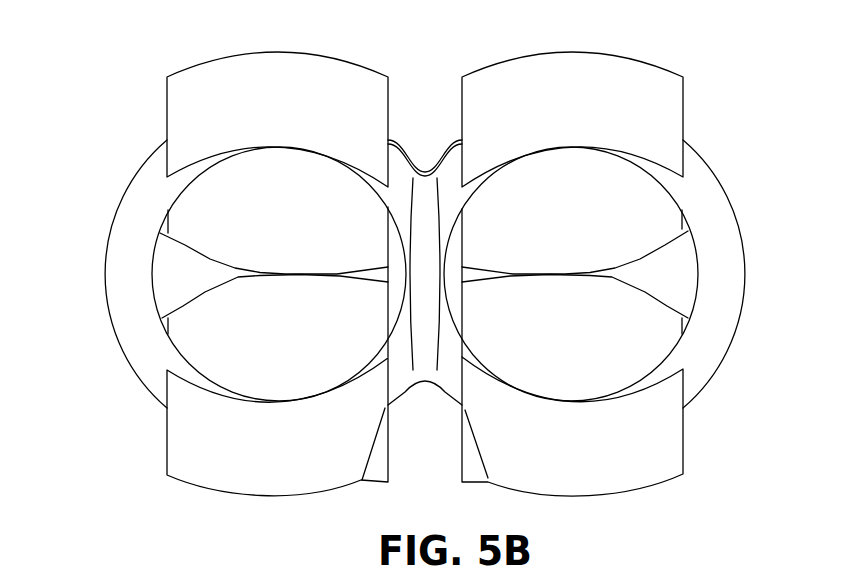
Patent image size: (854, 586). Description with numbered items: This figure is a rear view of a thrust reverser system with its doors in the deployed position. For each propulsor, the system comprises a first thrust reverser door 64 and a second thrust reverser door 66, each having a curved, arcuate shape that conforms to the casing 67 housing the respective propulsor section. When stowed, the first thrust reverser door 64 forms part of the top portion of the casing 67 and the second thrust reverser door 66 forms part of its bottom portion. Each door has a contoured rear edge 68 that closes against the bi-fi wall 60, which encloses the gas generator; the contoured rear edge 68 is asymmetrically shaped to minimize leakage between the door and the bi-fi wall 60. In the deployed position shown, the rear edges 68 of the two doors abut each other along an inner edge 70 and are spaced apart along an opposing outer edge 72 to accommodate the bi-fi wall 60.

The bi-fi wall 60 is at (162, 270).
The first thrust reverser door 64 is at (187, 106).
The second thrust reverser door 66 is at (205, 452).
The casing 67 is at (104, 294).
The contoured rear edge 68 is at (223, 265).
The inner edge 70 is at (518, 267).
The outer edge 72 is at (658, 298).